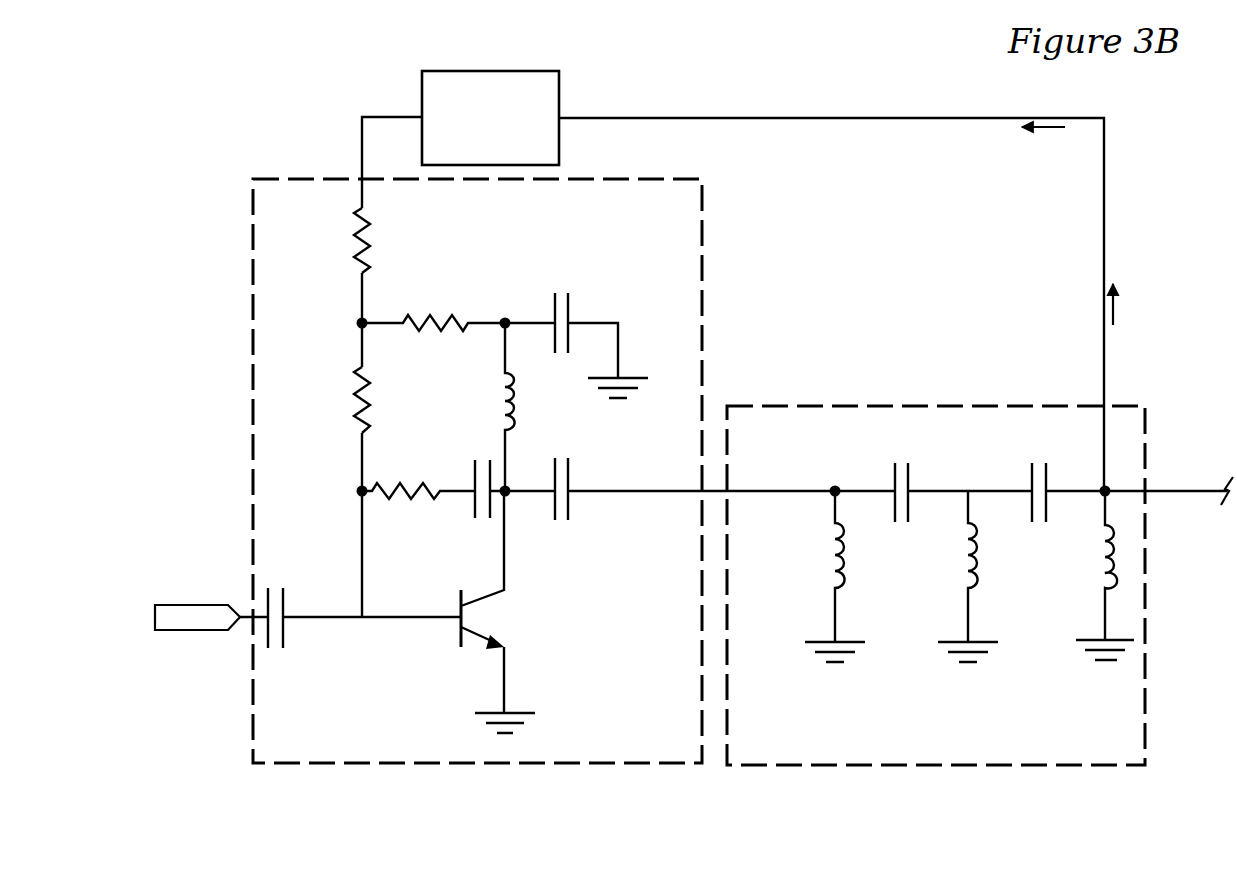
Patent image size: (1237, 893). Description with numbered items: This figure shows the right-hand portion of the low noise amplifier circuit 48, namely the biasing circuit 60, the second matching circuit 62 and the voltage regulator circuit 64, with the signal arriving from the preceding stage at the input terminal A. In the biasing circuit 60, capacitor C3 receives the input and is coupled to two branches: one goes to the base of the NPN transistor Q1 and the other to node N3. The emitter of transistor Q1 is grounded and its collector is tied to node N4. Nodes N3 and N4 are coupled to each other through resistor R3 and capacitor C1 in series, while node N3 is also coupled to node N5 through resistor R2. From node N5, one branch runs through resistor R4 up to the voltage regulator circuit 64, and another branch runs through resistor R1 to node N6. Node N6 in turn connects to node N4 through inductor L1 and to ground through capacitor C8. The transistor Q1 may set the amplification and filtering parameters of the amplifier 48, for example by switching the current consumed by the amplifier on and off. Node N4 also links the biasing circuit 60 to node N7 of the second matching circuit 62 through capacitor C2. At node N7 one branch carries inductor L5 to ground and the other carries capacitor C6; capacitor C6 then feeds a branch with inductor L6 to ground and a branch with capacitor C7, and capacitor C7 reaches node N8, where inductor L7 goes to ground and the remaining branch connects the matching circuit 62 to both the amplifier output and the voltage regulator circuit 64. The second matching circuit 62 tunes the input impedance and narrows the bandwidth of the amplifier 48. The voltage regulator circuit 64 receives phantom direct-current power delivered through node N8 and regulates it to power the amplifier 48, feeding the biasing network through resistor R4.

The low noise amplifier 48 is at (833, 64).
The biasing circuit 60 is at (301, 174).
The second matching circuit 62 is at (995, 402).
The voltage regulator circuit 64 is at (518, 68).
The resistor R1 is at (433, 313).
The resistor R2 is at (348, 400).
The resistor R3 is at (418, 503).
The resistor R4 is at (348, 240).
The capacitor C1 is at (486, 501).
The capacitor C2 is at (670, 478).
The capacitor C3 is at (350, 606).
The capacitor C6 is at (933, 477).
The capacitor C7 is at (1130, 478).
The capacitor C8 is at (576, 334).
The inductor L1 is at (489, 407).
The inductor L5 is at (827, 576).
The inductor L6 is at (963, 576).
The inductor L7 is at (1095, 575).
The NPN transistor Q1 is at (486, 612).
The node N3 is at (348, 491).
The node N4 is at (520, 479).
The node N5 is at (348, 323).
The node N6 is at (505, 312).
The node N7 is at (837, 479).
The node N8 is at (1120, 478).
The input terminal A is at (197, 617).